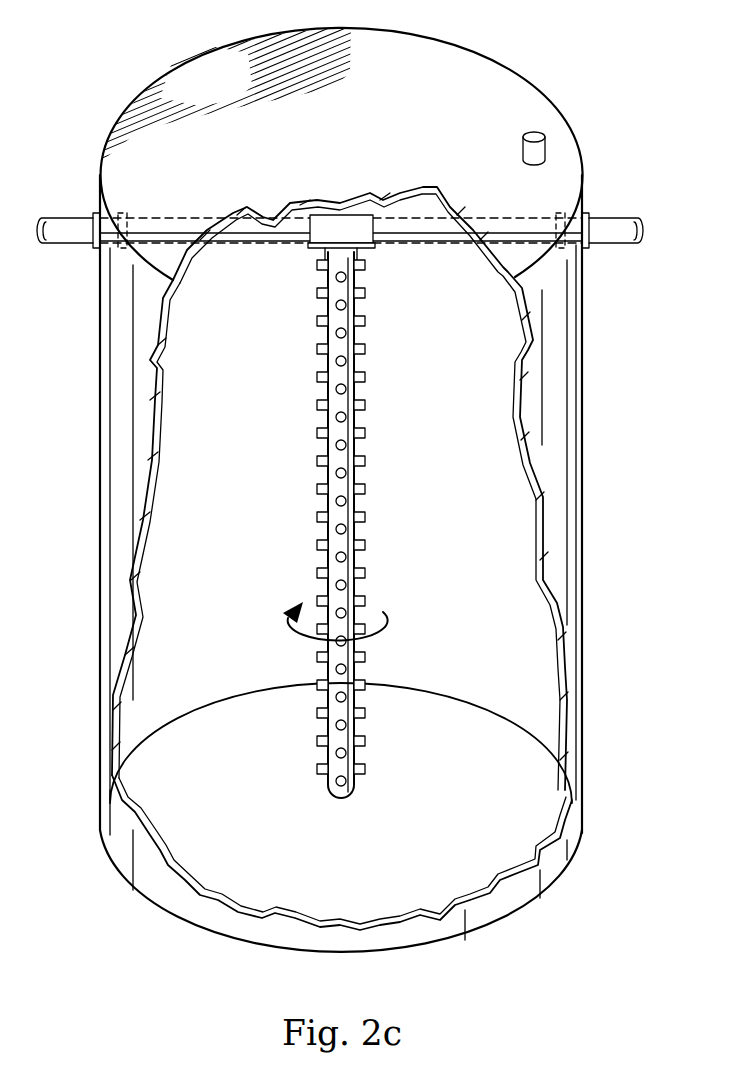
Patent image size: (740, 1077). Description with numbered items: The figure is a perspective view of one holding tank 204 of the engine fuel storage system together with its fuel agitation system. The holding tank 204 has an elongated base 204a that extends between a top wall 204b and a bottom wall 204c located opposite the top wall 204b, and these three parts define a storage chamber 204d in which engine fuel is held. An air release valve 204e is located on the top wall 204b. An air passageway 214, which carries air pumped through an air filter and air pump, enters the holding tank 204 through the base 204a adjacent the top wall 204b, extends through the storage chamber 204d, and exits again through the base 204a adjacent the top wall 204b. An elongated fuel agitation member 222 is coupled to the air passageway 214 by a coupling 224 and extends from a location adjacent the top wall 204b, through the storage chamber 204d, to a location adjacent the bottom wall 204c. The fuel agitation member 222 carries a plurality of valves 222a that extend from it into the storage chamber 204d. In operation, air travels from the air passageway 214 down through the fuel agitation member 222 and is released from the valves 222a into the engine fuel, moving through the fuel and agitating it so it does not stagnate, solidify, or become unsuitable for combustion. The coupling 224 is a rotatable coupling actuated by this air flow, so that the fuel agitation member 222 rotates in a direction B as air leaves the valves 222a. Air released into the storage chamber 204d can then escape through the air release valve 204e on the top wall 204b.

The holding tank 204 is at (339, 490).
The elongated base 204a is at (583, 448).
The top wall 204b is at (197, 66).
The bottom wall 204c is at (510, 923).
The storage chamber 204d is at (198, 413).
The air release valve 204e is at (520, 150).
The air passageway 214 is at (67, 215).
The elongated fuel agitation member 222 is at (344, 525).
The valves 222a is at (317, 512).
The coupling 224 is at (358, 250).
The direction of rotation B is at (287, 622).